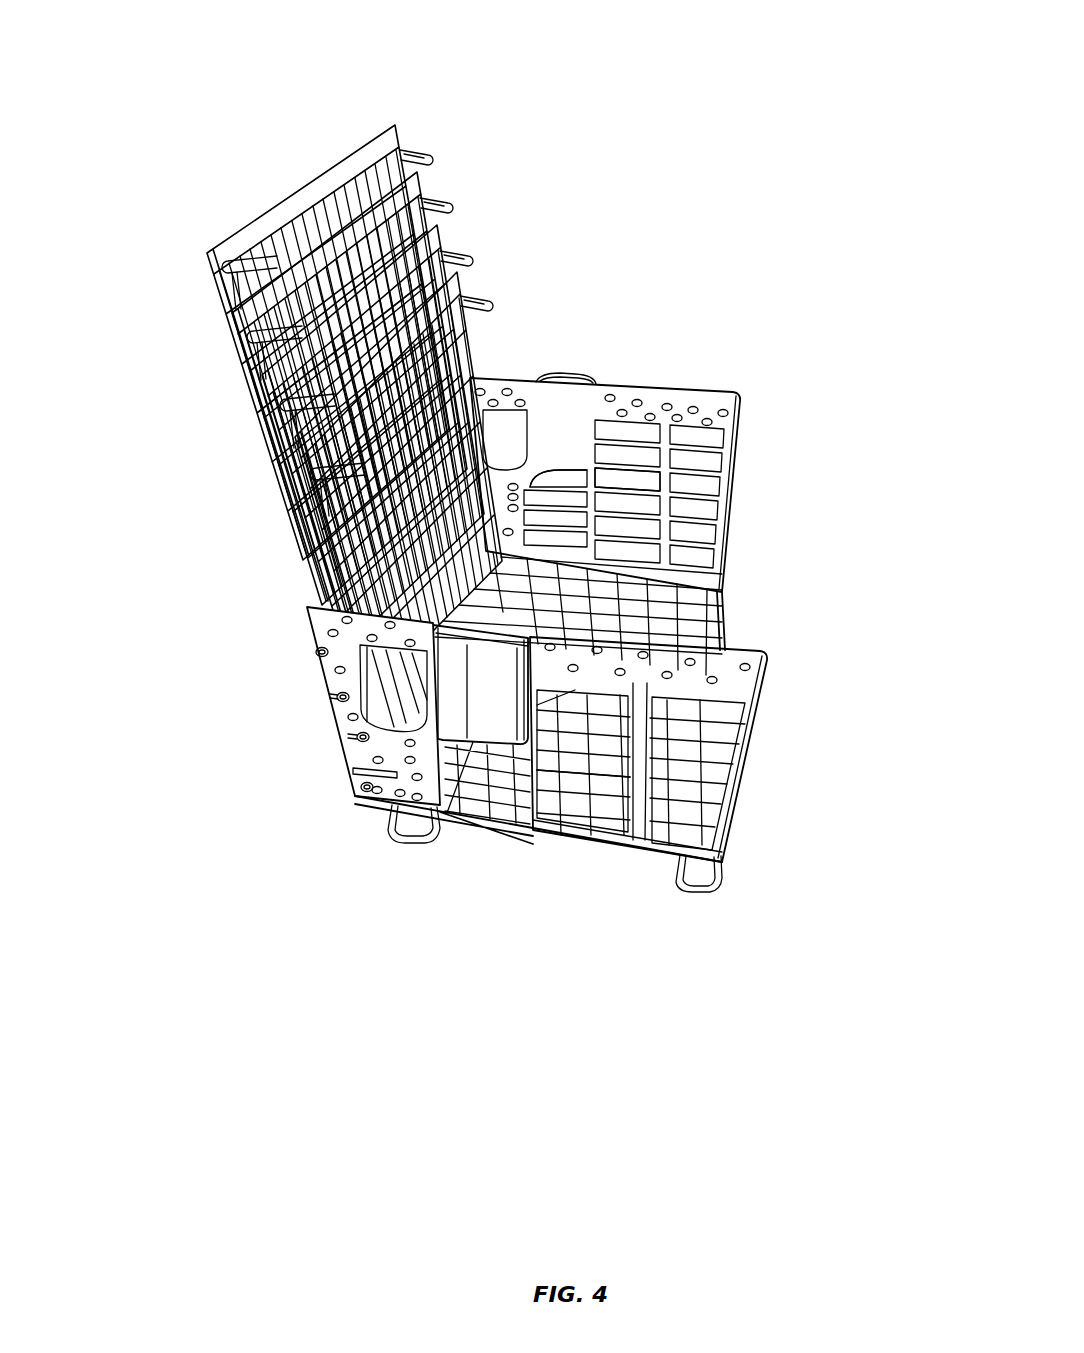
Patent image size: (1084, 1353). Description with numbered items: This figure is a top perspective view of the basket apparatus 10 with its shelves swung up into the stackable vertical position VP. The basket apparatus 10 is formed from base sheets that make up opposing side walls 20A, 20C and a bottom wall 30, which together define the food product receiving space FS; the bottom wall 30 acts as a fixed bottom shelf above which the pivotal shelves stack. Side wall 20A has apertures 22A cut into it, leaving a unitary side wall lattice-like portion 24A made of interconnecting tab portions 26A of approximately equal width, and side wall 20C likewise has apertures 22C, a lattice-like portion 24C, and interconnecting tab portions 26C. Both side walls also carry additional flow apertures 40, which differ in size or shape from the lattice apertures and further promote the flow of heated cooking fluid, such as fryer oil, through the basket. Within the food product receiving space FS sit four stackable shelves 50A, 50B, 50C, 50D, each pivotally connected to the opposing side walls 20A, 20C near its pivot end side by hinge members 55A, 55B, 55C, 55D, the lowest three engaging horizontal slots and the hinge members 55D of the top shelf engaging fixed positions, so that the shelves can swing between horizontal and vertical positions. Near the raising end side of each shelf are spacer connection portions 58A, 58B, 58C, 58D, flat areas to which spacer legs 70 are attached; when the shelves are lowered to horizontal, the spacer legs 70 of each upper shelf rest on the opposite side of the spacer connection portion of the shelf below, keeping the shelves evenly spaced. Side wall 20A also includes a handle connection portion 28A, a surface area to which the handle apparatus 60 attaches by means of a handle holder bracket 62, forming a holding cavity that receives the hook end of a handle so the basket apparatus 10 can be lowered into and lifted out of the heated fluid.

The basket apparatus 10 is at (772, 206).
The side wall 20A is at (713, 400).
The side wall 20C is at (755, 698).
The apertures 22A is at (707, 488).
The apertures 22C is at (682, 772).
The unitary side wall lattice-like portion 24A is at (630, 522).
The unitary side wall lattice-like portion 24C is at (617, 760).
The interconnecting tab portions 26A is at (698, 507).
The interconnecting tab portions 26C is at (699, 724).
The handle connection portion 28A is at (565, 420).
The bottom wall 30 is at (722, 617).
The additional flow apertures 40 is at (692, 394).
The stackable shelf 50A is at (337, 560).
The stackable shelf 50B is at (305, 532).
The stackable shelf 50C is at (270, 378).
The stackable shelf 50D is at (228, 245).
The hinge members 55A is at (361, 790).
The hinge members 55B is at (357, 738).
The hinge members 55C is at (337, 697).
The hinge members 55D is at (316, 652).
The spacer connection portion 58A is at (447, 283).
The spacer connection portion 58B is at (423, 243).
The spacer connection portion 58C is at (405, 198).
The spacer connection portion 58D is at (216, 276).
The handle apparatus 60 is at (428, 770).
The handle holder bracket 62 is at (570, 378).
The spacer legs 70 is at (255, 329).
The stackable vertical position VP is at (302, 148).
The food product receiving space FS is at (706, 458).